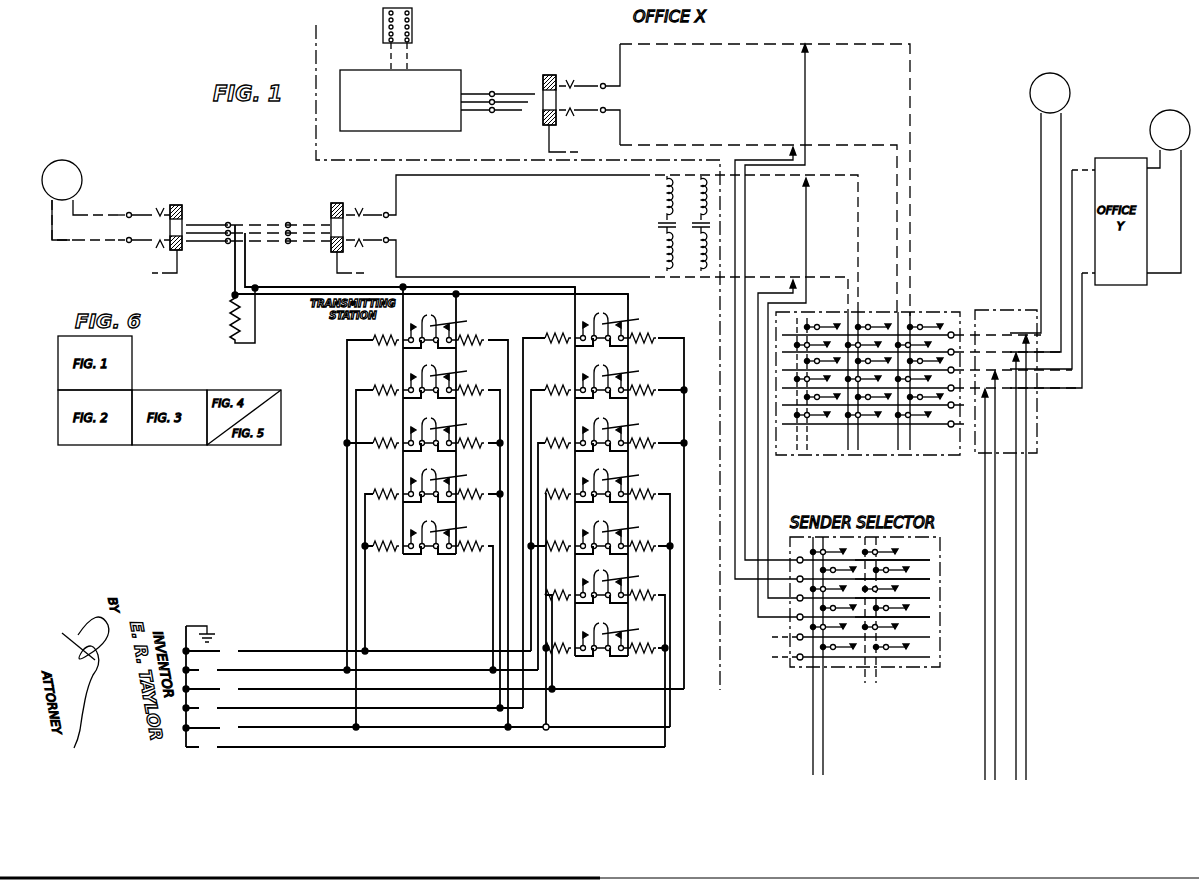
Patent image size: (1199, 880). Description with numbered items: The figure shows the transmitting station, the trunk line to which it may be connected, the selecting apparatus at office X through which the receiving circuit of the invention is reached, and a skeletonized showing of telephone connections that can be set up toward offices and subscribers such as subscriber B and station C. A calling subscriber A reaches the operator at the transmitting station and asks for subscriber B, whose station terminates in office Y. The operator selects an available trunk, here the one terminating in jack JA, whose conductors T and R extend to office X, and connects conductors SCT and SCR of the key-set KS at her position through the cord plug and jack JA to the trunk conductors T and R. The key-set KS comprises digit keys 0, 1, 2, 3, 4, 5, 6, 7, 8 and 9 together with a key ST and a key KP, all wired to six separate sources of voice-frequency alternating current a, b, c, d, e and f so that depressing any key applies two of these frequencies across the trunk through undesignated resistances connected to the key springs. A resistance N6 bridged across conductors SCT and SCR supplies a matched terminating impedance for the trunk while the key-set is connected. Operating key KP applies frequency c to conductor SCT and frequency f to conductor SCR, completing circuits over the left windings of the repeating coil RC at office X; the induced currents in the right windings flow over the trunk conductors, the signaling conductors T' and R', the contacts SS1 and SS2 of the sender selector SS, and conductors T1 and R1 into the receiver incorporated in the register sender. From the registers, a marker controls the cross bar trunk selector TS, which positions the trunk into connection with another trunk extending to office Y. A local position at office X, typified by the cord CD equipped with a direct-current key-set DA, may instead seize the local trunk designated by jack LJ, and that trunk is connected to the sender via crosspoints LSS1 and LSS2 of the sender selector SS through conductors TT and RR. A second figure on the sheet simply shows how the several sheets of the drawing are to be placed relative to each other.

The subscriber A is at (83, 178).
The subscriber B is at (1148, 130).
The subscriber station C is at (1072, 92).
The jack JA is at (341, 203).
The key-set DA is at (414, 28).
The cord CD is at (478, 96).
The jack LJ is at (555, 72).
The trunk conductor T is at (663, 243).
The trunk conductor R is at (658, 280).
The repeating coil RC is at (681, 277).
The key-set conductor SCT is at (302, 287).
The key-set conductor SCR is at (300, 295).
The resistance N6 is at (228, 320).
The key-set KS is at (515, 517).
The digit key 0 is at (428, 537).
The digit key 1 is at (428, 485).
The digit key 2 is at (428, 434).
The digit key 3 is at (428, 381).
The digit key 4 is at (428, 331).
The digit key 5 is at (600, 329).
The digit key 6 is at (600, 381).
The digit key 7 is at (600, 434).
The digit key 8 is at (600, 485).
The digit key 9 is at (600, 537).
The key KP is at (603, 586).
The key ST is at (602, 639).
The alternating current frequency source a is at (358, 651).
The alternating current frequency source b is at (362, 670).
The alternating current frequency source c is at (435, 689).
The alternating current frequency source d is at (354, 708).
The alternating current frequency source e is at (428, 728).
The alternating current frequency source f is at (425, 747).
The lead T1 is at (740, 45).
The lead R1 is at (730, 147).
The conductor TT is at (808, 97).
The conductor RR is at (738, 213).
The signaling conductor T' is at (802, 388).
The signaling conductor R' is at (777, 434).
The cross bar trunk selector TS is at (928, 456).
The sender selector SS is at (918, 668).
The crosspoint LSS1 is at (855, 560).
The crosspoint LSS2 is at (855, 579).
The contact SS1 is at (855, 598).
The contact SS2 is at (855, 617).